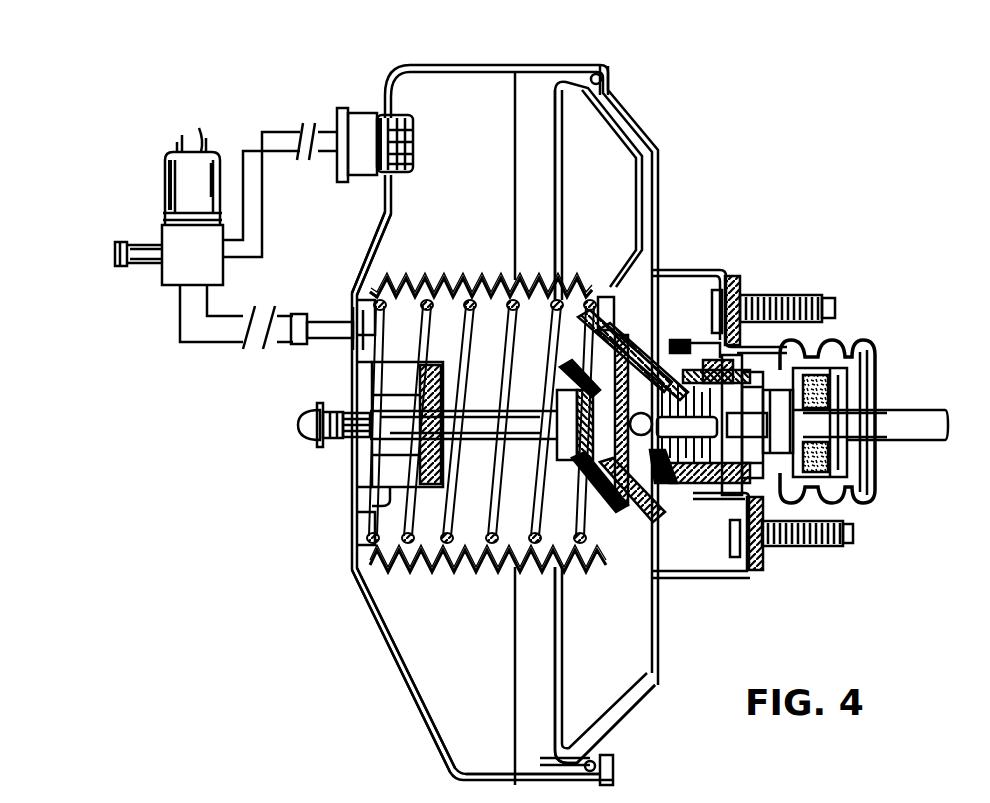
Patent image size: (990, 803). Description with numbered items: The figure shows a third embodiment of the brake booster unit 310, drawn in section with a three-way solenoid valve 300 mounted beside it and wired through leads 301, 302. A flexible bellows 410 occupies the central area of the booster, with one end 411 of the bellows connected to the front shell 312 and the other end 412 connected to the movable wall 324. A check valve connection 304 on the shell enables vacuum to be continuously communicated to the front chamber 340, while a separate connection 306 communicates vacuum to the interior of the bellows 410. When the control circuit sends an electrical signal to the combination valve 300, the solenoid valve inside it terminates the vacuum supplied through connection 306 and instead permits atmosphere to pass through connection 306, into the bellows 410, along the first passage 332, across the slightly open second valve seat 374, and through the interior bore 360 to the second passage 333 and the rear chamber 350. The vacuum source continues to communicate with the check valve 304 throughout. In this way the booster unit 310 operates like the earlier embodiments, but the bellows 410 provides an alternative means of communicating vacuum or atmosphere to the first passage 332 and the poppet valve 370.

The valve 300 is at (222, 263).
The electrical lead 301 is at (177, 142).
The electrical lead 302 is at (199, 128).
The check valve connection 304 is at (394, 167).
The connection 306 is at (350, 322).
The booster unit 310 is at (718, 186).
The front shell 312 is at (372, 236).
The movable wall 324 is at (607, 185).
The first passage 332 is at (635, 361).
The second passage 333 is at (661, 486).
The front chamber 340 is at (482, 632).
The rear chamber 350 is at (650, 564).
The interior bore 360 is at (657, 393).
The poppet valve 370 is at (664, 505).
The second valve seat 374 is at (668, 393).
The flexible bellows 410 is at (486, 290).
The one end of the bellows 411 is at (376, 293).
The other end of the bellows 412 is at (580, 296).